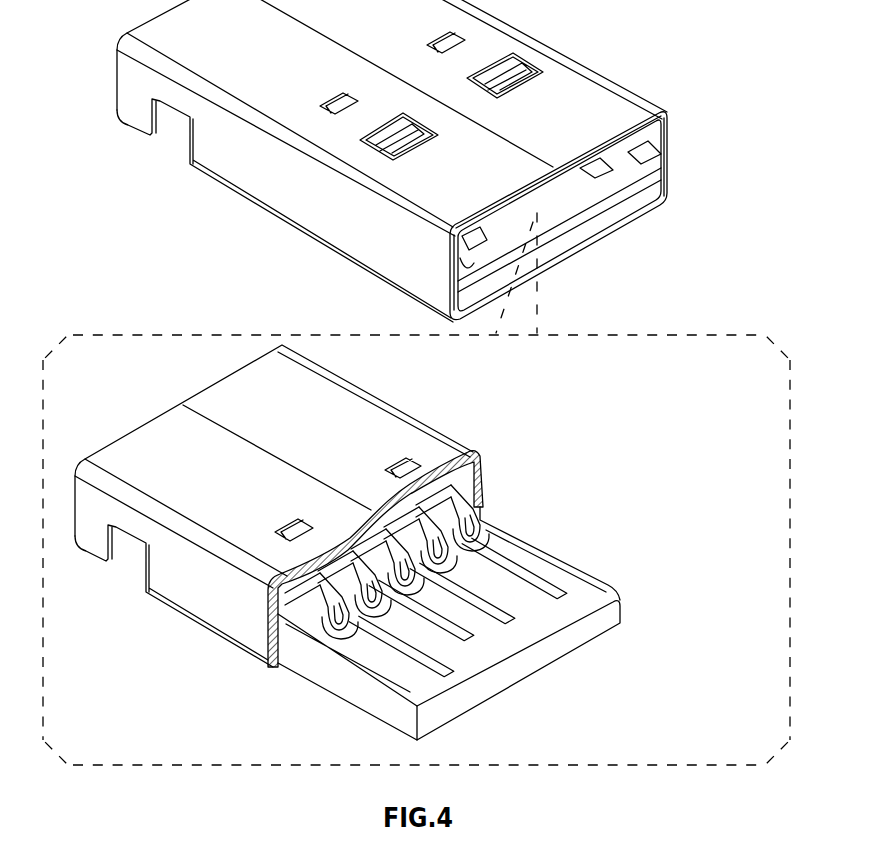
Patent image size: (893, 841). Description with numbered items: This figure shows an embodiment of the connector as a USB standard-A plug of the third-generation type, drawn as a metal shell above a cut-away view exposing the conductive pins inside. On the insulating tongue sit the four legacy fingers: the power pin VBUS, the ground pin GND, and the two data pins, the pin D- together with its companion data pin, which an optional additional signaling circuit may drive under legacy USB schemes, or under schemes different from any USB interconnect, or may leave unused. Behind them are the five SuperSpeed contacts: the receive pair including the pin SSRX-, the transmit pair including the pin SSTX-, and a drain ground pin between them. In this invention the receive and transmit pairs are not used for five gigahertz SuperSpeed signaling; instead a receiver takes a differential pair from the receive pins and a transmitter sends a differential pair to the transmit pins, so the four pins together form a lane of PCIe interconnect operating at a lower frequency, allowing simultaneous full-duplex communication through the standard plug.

The pin VBUS is at (566, 598).
The pin D− D- is at (514, 624).
The pin GND is at (453, 676).
The pin SSRX− SSRX- is at (340, 611).
The pin SSTX− SSTX- is at (439, 545).